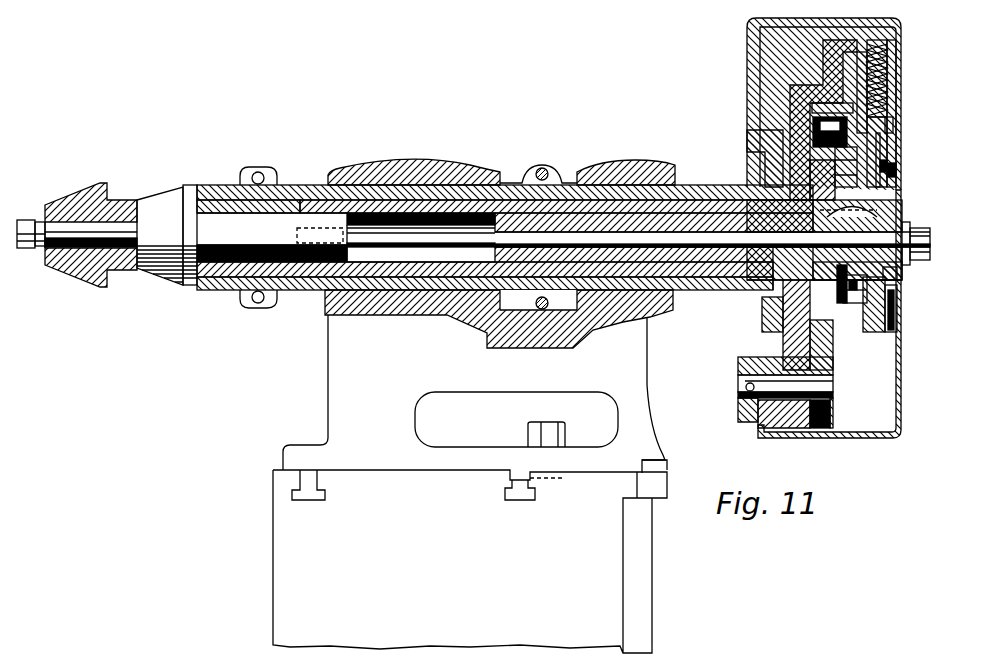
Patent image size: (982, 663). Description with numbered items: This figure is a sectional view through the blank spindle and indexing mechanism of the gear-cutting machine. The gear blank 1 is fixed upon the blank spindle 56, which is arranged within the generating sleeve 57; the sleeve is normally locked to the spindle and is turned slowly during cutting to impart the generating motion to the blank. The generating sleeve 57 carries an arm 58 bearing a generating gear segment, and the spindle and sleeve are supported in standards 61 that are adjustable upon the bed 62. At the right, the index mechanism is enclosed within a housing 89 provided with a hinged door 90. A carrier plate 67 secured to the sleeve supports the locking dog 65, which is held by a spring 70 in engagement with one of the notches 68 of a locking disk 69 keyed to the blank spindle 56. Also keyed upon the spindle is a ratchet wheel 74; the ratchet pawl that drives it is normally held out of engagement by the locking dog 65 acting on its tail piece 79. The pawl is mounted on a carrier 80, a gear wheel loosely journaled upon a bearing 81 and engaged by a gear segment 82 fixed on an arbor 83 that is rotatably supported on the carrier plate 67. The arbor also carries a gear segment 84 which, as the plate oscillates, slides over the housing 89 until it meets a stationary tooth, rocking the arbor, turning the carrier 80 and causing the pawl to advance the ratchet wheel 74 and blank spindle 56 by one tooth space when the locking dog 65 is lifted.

The gear blank 1 is at (80, 210).
The blank spindle 56 is at (690, 212).
The generating sleeve 57 is at (425, 183).
The arm 58 is at (516, 178).
The standards 61 is at (368, 167).
The bed 62 is at (470, 484).
The locking dog 65 is at (893, 138).
The carrier plate 67 is at (795, 93).
The notches 68 is at (888, 332).
The locking disk 69 is at (893, 161).
The spring 70 is at (888, 85).
The ratchet wheel 74 is at (895, 347).
The tail piece 79 is at (893, 183).
The carrier 80 is at (848, 306).
The bearing 81 is at (833, 272).
The gear segment 82 is at (833, 367).
The arbor 83 is at (833, 393).
The gear segment 84 is at (762, 338).
The housing 89 is at (750, 60).
The hinged door 90 is at (897, 394).